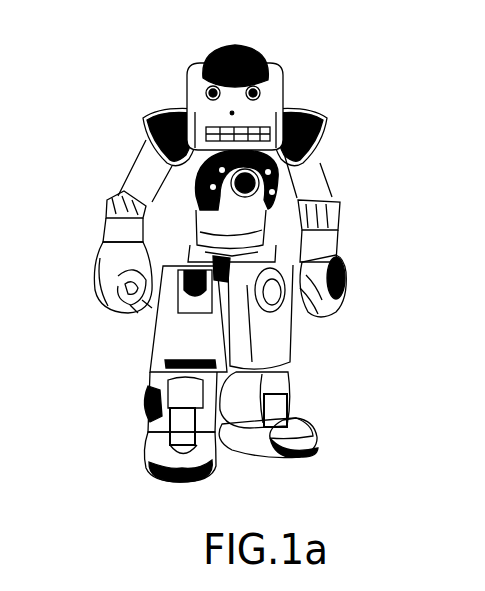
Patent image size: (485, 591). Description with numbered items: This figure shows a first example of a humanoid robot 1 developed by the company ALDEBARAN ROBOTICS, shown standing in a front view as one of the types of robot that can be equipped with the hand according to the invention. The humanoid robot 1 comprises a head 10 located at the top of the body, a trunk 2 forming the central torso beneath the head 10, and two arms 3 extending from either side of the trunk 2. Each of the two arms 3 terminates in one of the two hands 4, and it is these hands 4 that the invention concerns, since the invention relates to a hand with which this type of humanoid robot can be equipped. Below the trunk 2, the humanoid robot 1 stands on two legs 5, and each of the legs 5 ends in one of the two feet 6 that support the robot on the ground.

The humanoid robot 1 is at (122, 56).
The head 10 is at (278, 88).
The trunk 2 is at (278, 157).
The arms 3 is at (328, 228).
The hands 4 is at (340, 275).
The legs 5 is at (290, 338).
The feet 6 is at (310, 430).